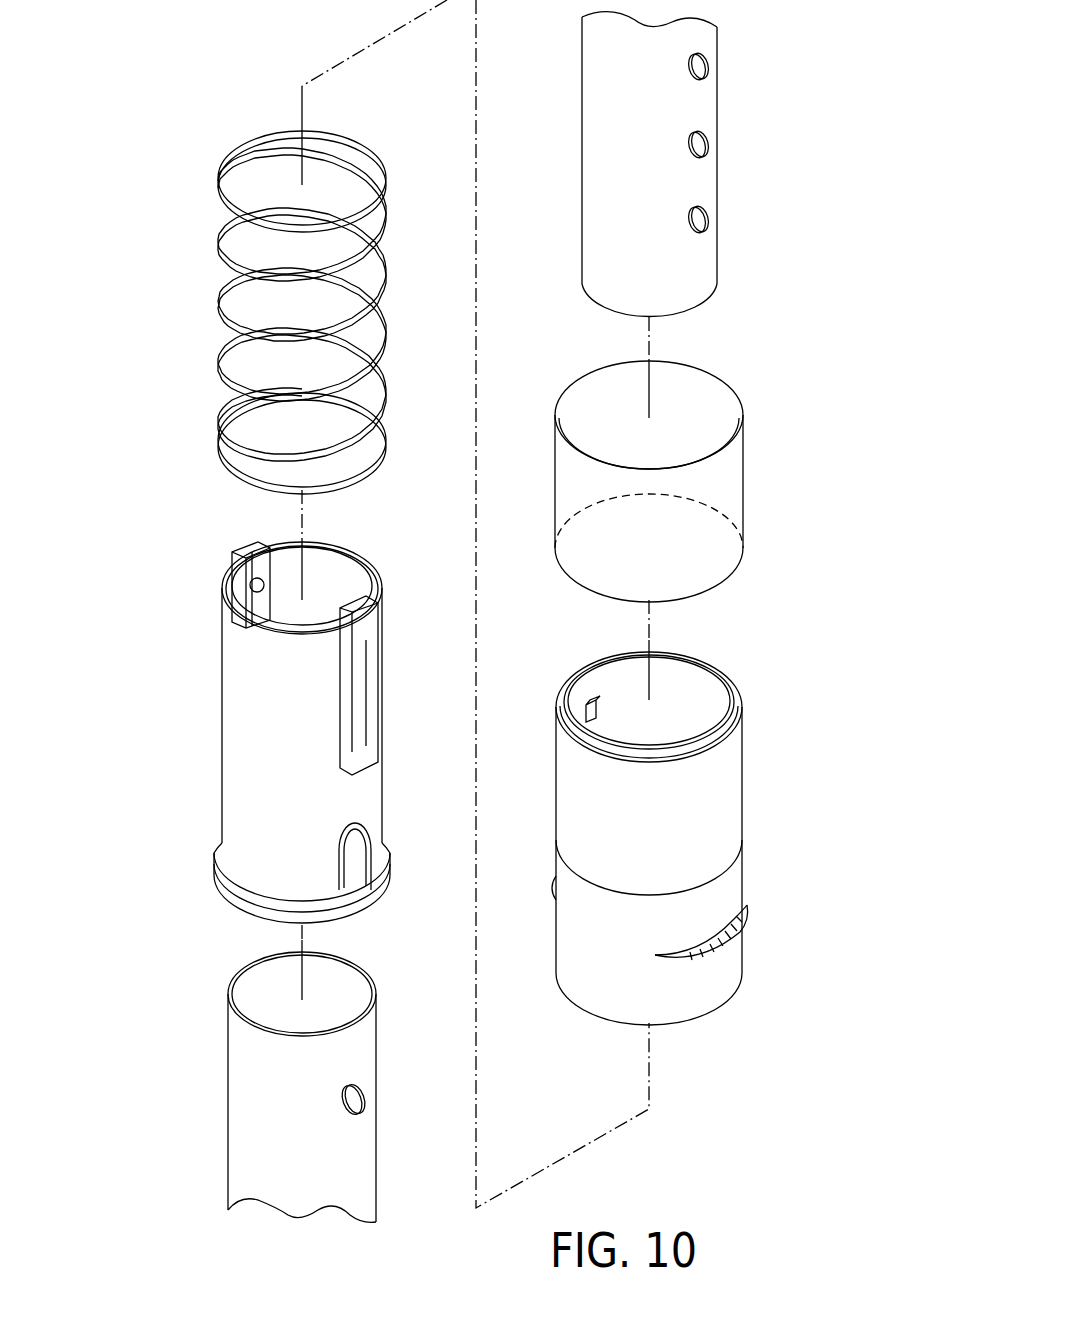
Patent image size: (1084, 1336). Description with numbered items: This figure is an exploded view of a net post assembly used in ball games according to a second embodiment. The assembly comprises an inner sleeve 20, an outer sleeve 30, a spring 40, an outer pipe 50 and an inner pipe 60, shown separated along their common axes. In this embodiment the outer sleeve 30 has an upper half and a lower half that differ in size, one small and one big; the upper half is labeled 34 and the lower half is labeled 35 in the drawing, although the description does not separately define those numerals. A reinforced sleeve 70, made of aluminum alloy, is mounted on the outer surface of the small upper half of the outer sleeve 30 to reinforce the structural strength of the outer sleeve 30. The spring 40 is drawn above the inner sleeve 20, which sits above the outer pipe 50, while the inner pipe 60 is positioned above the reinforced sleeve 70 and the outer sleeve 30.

The inner sleeve 20 is at (200, 725).
The outer sleeve 30 is at (726, 838).
The upper sleeve 34 is at (722, 783).
The lower sleeve 35 is at (732, 890).
The spring 40 is at (392, 268).
The outer pipe 50 is at (250, 1093).
The inner pipe 60 is at (703, 176).
The reinforced sleeve 70 is at (730, 490).